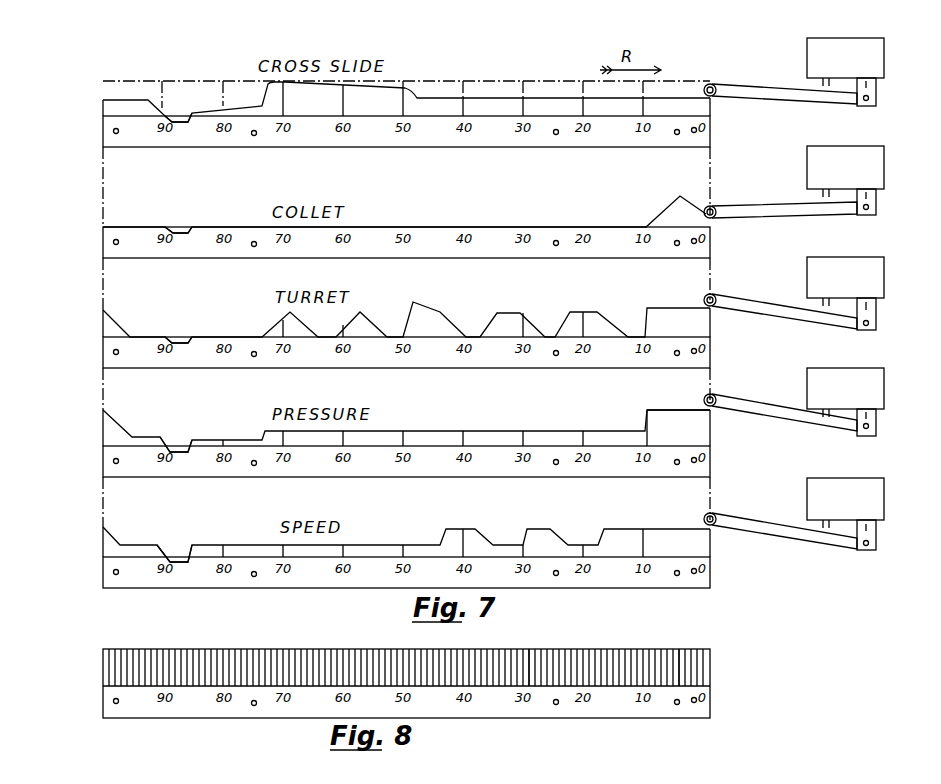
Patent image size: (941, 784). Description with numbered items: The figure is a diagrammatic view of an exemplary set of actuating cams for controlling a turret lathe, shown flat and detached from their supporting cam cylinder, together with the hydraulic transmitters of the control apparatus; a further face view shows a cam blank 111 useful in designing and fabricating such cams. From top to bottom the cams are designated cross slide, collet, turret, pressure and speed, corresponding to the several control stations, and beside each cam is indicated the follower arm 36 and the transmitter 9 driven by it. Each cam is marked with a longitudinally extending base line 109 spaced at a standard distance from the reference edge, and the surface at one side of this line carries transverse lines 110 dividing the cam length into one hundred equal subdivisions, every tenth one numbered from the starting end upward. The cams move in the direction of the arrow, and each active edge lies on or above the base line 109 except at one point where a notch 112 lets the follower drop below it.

In FIG. 7, the transmitter 9 is at (896, 66).
In FIG. 7, the follower arm 36 is at (758, 92).
In FIG. 7, the base line 109 is at (492, 118).
In FIG. 8, the base line 109 is at (310, 688).
In FIG. 7, the transverse lines 110 is at (587, 431).
In FIG. 8, the transverse lines 110 is at (530, 664).
In FIG. 8, the blank cam strip 111 is at (377, 672).
In FIG. 7, the notch 112 is at (186, 118).